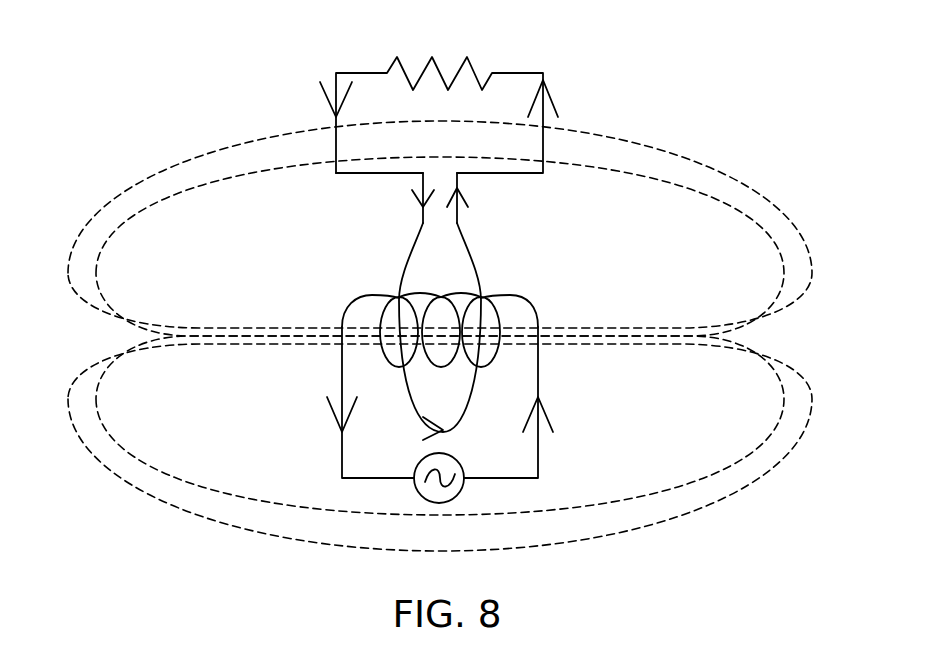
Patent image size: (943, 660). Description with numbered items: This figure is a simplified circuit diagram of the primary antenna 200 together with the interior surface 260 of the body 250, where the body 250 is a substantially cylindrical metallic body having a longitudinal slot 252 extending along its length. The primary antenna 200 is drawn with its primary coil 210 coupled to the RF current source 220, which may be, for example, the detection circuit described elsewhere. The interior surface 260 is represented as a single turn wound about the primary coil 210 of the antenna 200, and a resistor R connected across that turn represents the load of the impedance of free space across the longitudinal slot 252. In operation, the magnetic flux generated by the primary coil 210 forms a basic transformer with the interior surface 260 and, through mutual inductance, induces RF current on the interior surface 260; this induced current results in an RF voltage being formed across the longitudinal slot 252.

The primary antenna 200 is at (300, 428).
The primary coil 210 is at (498, 317).
The RF current source 220 is at (415, 488).
The body 250 is at (515, 251).
The longitudinal slot 252 is at (584, 81).
The interior surface 260 is at (400, 272).